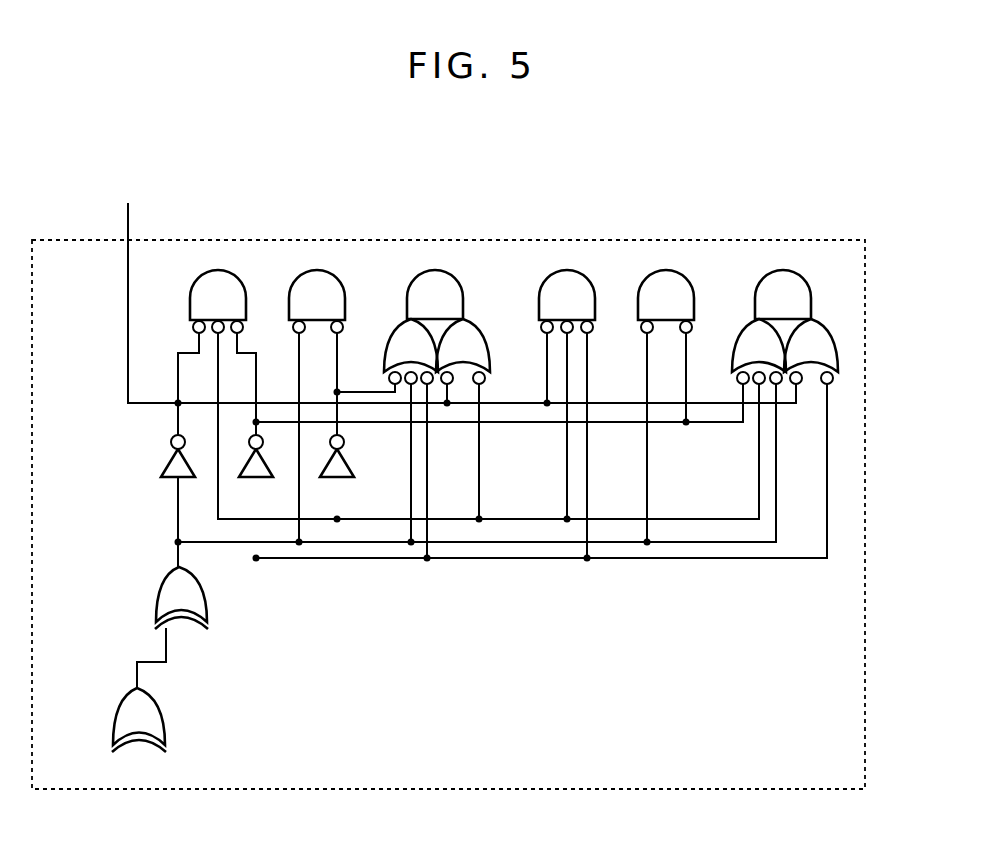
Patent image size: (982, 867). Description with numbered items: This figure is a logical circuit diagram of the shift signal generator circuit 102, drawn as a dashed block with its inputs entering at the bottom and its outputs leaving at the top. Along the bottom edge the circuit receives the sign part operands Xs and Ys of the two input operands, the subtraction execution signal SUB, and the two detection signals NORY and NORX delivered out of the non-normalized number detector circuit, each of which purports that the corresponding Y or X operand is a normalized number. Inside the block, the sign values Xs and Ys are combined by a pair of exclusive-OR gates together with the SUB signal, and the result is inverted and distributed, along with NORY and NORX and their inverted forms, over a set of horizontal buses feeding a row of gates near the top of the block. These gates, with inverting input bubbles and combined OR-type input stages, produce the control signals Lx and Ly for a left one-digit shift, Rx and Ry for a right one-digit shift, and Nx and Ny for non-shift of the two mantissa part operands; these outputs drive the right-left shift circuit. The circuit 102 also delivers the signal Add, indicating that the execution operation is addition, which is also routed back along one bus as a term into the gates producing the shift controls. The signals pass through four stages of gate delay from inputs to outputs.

The shift signal generator circuit 102 is at (740, 790).
The addition signal Add is at (451, 288).
The left one-digit shift signal for X operand Lx is at (218, 270).
The right one-digit shift signal for X operand Rx is at (317, 270).
The non-shift signal for X operand Nx is at (435, 270).
The left one-digit shift signal for Y operand Ly is at (567, 270).
The right one-digit shift signal for Y operand Ry is at (666, 270).
The non-shift signal for Y operand Ny is at (783, 270).
The sign part operand of X Xs is at (123, 751).
The sign part operand of Y Ys is at (154, 751).
The subtraction execution signal SUB is at (197, 628).
The detection signal for Y operand NORY is at (256, 477).
The detection signal for X operand NORX is at (337, 477).